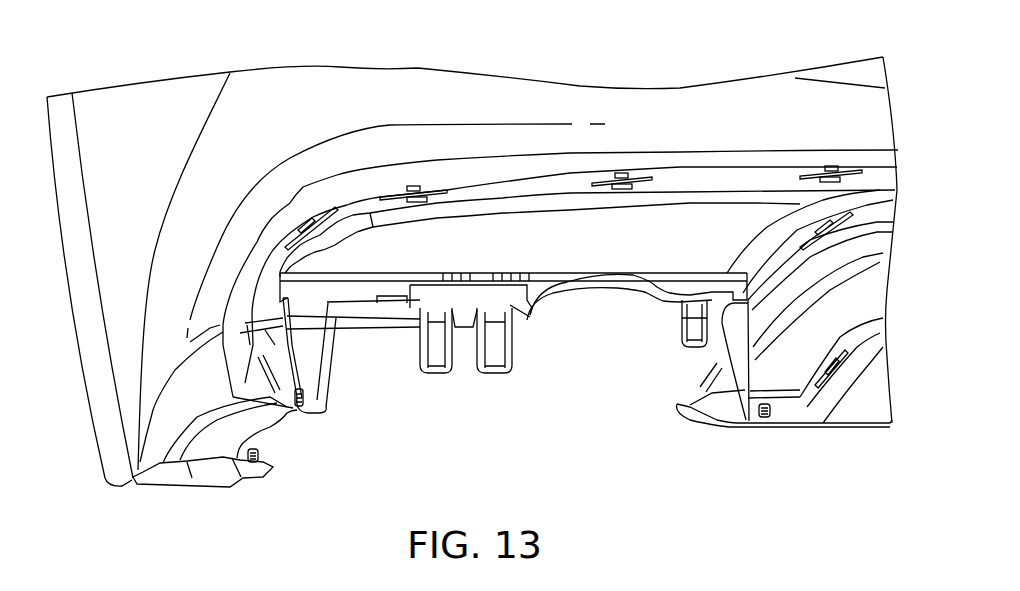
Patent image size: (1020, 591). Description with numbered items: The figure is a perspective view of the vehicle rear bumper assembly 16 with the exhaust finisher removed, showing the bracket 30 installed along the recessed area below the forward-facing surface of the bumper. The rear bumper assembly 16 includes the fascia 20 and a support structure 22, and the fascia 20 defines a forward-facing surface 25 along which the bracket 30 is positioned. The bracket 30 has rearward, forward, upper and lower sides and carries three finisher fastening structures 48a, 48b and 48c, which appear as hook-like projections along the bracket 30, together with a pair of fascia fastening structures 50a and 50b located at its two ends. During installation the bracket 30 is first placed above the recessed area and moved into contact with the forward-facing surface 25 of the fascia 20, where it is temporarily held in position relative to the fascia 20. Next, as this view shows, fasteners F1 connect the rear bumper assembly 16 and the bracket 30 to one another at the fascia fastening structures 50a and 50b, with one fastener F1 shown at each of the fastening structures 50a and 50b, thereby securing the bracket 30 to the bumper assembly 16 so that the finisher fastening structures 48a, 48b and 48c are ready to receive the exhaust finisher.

The vehicle rear bumper assembly 16 is at (418, 60).
The fascia 20 is at (284, 105).
The support structure 22 is at (722, 180).
The forward-facing surface 25 is at (539, 105).
The bracket 30 is at (552, 293).
The finisher fastening structure 48a is at (432, 378).
The finisher fastening structure 48b is at (497, 378).
The finisher fastening structure 48c is at (690, 350).
The fascia fastening structure 50a is at (327, 385).
The fascia fastening structure 50b is at (747, 417).
The fastener F1 is at (260, 453).